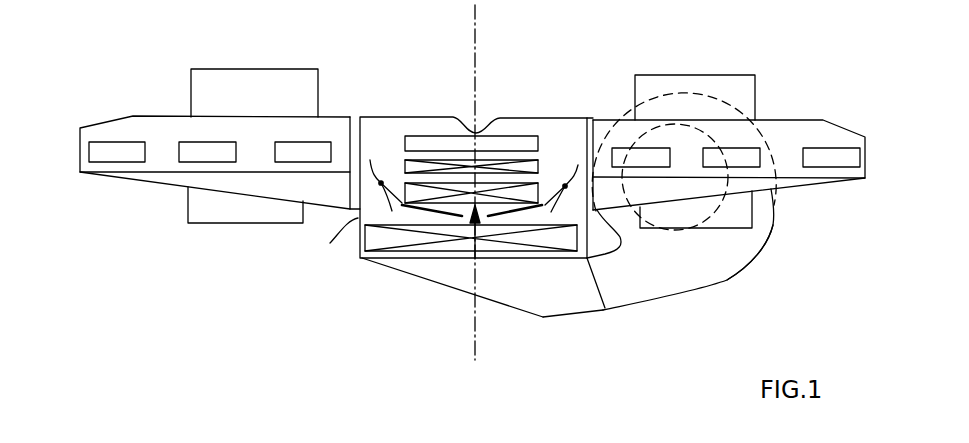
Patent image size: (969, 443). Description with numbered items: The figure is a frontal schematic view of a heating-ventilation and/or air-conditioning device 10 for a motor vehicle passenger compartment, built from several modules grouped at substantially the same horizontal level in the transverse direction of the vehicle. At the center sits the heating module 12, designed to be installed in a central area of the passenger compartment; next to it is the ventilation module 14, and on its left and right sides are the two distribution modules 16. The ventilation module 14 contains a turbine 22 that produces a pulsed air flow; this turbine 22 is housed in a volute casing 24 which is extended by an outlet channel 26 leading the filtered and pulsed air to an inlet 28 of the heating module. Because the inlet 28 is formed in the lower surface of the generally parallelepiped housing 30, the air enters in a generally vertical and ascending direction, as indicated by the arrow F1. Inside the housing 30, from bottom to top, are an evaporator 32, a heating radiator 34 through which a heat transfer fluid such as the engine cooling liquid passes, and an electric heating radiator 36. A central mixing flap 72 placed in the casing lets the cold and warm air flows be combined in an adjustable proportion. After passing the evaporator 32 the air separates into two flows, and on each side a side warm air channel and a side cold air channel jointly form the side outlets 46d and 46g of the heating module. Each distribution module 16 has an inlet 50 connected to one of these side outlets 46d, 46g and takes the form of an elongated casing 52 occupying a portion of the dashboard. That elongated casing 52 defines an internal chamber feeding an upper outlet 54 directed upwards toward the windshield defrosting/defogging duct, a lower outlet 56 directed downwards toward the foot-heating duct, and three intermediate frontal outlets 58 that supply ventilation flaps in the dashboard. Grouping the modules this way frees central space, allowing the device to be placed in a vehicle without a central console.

The heating-ventilation and/or air-conditioning device 10 is at (116, 92).
The heating module 12 is at (360, 259).
The ventilation module 14 is at (764, 261).
The distribution module 16 is at (118, 186).
The turbine 22 is at (692, 232).
The volute casing 24 is at (773, 227).
The outlet channel 26 is at (637, 308).
The inlet 28 is at (423, 260).
The housing 30 is at (347, 251).
The evaporator 32 is at (385, 240).
The heating radiator 34 is at (455, 208).
The electric heating radiator 36 is at (505, 167).
The side outlet 46g is at (368, 131).
The side outlet 46d is at (583, 150).
The inlet 50 is at (350, 147).
The elongated casing 52 is at (173, 187).
The upper outlet 54 is at (227, 90).
The lower outlet 56 is at (227, 221).
The frontal outlets 58 is at (193, 154).
The central mixing flap 72 is at (433, 143).
The arrow F1 is at (478, 246).